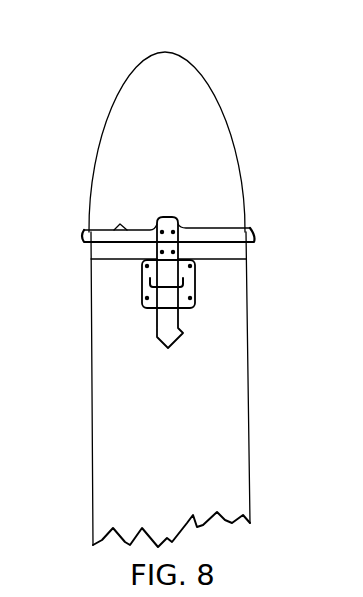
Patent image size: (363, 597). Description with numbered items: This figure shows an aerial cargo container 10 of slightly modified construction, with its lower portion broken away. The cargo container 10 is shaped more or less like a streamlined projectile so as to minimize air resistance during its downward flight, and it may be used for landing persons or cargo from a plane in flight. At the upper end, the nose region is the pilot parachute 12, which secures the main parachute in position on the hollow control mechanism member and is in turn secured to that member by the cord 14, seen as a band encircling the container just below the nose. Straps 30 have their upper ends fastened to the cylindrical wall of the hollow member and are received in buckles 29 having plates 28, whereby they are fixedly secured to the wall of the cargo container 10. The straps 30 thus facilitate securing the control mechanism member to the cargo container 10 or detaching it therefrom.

The cargo container 10 is at (210, 402).
The pilot parachute 12 is at (182, 85).
The cord 14 is at (250, 233).
The plates 28 is at (193, 283).
The buckles 29 is at (150, 283).
The straps 30 is at (163, 323).